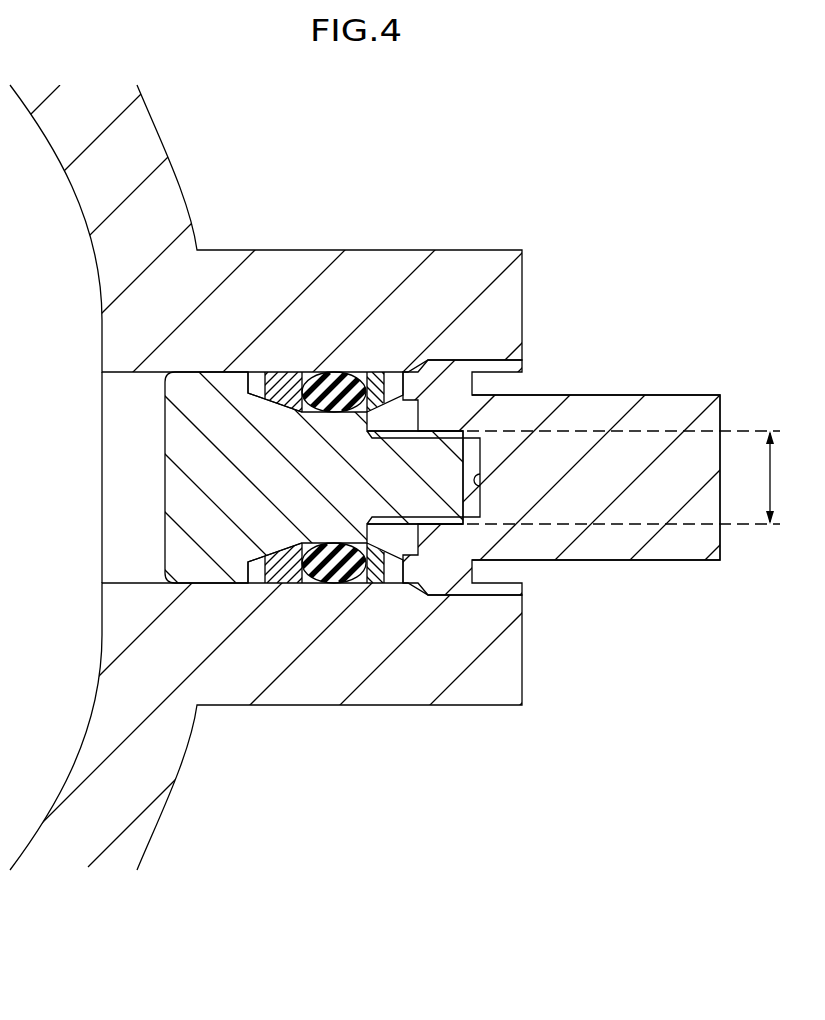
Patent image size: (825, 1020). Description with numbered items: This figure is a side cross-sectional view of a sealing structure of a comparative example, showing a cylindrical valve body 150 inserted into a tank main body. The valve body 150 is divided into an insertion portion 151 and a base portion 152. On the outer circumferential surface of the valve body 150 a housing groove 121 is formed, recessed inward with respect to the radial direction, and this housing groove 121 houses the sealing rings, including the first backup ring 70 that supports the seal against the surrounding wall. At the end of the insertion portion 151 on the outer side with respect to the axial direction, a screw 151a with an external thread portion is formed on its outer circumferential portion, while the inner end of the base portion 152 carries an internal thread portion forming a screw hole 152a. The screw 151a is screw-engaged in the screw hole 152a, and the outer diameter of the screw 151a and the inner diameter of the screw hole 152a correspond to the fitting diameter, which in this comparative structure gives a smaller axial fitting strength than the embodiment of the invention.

The first backup ring 70 is at (340, 570).
The housing groove 121 is at (250, 360).
The valve body 150 is at (636, 388).
The insertion portion 151 is at (158, 466).
The screw 151a is at (383, 489).
The base portion 152 is at (636, 568).
The screw hole 152a is at (492, 480).